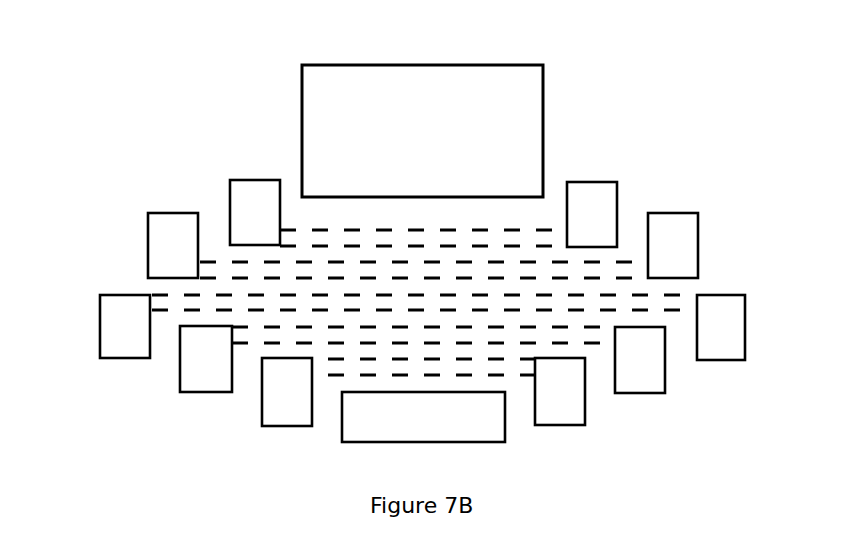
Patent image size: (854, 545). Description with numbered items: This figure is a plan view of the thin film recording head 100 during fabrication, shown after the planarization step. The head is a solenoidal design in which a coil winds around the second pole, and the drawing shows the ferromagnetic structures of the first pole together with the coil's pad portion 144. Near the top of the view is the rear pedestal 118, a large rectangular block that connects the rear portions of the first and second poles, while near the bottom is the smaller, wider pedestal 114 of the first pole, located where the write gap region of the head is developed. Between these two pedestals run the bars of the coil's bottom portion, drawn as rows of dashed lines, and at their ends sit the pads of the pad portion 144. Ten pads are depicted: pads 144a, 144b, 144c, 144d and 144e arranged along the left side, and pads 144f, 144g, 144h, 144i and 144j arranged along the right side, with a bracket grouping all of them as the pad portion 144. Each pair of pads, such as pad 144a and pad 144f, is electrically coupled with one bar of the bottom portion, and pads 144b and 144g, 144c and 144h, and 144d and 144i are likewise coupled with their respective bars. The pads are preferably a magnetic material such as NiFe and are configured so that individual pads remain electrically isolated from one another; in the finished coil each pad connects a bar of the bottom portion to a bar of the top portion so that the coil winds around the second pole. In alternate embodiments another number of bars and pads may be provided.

The thin film recording head 100 is at (445, 30).
The rear pedestal 118 is at (543, 130).
The pedestal 114 is at (390, 442).
The pad portion 144 is at (753, 182).
The pad 144a is at (262, 180).
The pad 144b is at (182, 213).
The pad 144c is at (118, 295).
The pad 144d is at (197, 392).
The pad 144e is at (277, 426).
The pad 144f is at (602, 182).
The pad 144g is at (651, 213).
The pad 144h is at (738, 360).
The pad 144i is at (648, 393).
The pad 144j is at (557, 425).